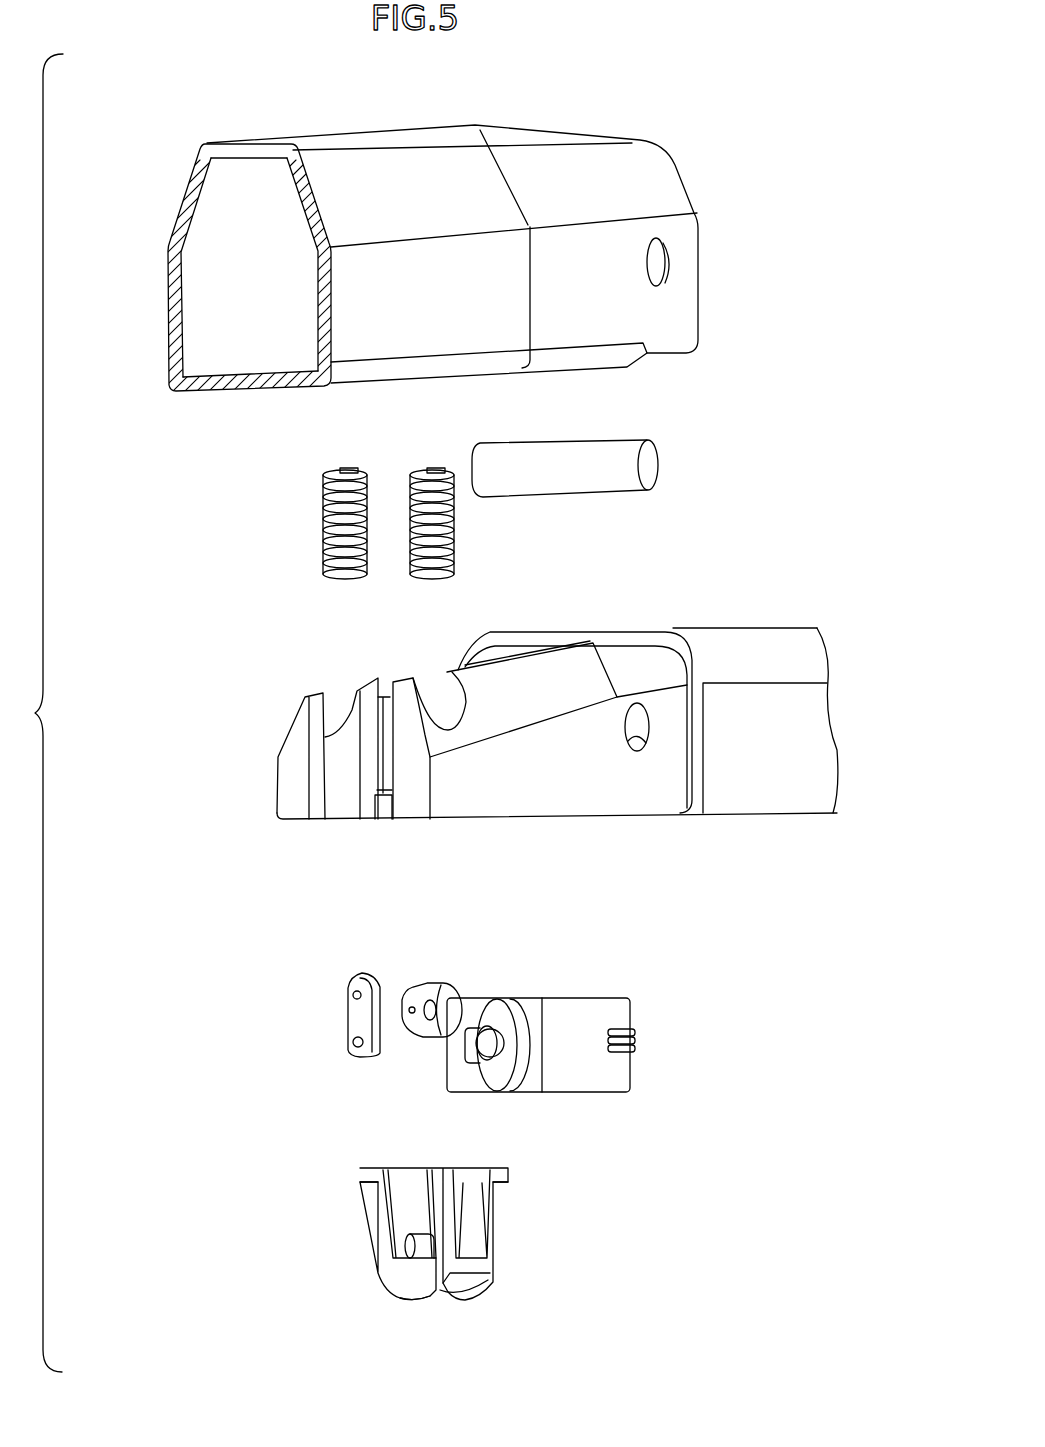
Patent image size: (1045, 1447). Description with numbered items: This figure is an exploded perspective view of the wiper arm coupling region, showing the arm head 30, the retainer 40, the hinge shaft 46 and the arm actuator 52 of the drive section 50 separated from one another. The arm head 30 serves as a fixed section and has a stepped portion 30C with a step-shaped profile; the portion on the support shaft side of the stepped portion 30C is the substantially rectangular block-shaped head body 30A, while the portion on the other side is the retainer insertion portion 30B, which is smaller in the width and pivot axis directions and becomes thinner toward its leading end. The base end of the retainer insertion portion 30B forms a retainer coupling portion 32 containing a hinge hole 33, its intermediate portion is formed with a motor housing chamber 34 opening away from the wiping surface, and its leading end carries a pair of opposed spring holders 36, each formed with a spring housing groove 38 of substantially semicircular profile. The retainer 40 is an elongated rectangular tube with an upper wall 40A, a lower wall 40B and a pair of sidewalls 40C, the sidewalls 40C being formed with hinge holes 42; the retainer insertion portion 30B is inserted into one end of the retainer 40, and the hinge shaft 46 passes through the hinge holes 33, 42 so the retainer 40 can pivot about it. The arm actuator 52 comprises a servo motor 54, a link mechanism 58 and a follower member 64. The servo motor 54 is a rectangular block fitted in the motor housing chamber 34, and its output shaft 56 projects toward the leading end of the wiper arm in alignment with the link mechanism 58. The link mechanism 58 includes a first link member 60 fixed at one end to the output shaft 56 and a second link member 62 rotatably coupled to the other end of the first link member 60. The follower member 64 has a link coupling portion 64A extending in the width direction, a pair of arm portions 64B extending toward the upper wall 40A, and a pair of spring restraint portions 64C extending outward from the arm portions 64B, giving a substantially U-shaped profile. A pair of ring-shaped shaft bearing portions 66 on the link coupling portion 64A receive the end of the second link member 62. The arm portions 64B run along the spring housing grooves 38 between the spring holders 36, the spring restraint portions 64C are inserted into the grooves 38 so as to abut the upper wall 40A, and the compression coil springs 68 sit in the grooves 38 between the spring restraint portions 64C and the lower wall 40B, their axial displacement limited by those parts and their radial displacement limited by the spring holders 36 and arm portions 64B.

The arm head 30 is at (517, 714).
The head body 30A is at (777, 790).
The retainer insertion portion 30B is at (557, 802).
The stepped portion 30C is at (628, 636).
The retainer coupling portion 32 is at (672, 717).
The hinge hole 33 is at (645, 750).
The motor housing chamber 34 is at (502, 650).
The spring holders 36 is at (290, 788).
The spring housing groove 38 is at (343, 807).
The retainer 40 is at (390, 257).
The upper wall 40A is at (257, 140).
The lower wall 40B is at (230, 393).
The sidewalls 40C is at (167, 290).
The hinge hole 42 is at (668, 273).
The hinge shaft 46 is at (668, 466).
The drive section 50 is at (372, 1149).
The arm actuator 52 is at (372, 1149).
The servo motor 54 is at (541, 1010).
The output shaft 56 is at (497, 1025).
The link mechanism 58 is at (360, 1052).
The first link member 60 is at (418, 1032).
The second link member 62 is at (350, 997).
The follower member 64 is at (431, 1260).
The link coupling portion 64A is at (407, 1302).
The arm portions 64B is at (377, 1212).
The spring restraint portions 64C is at (360, 1175).
The shaft bearing portions 66 is at (393, 1247).
The compression coil springs 68 is at (425, 468).